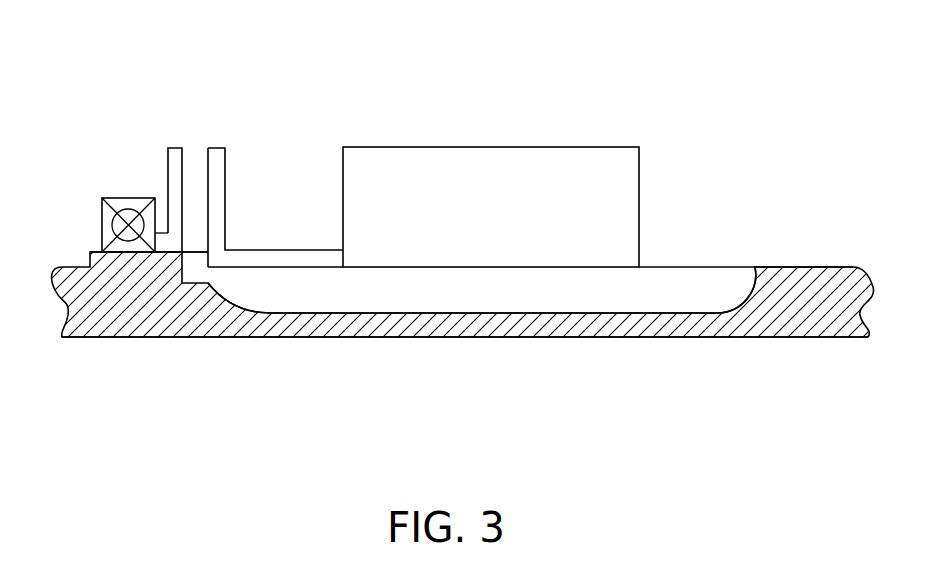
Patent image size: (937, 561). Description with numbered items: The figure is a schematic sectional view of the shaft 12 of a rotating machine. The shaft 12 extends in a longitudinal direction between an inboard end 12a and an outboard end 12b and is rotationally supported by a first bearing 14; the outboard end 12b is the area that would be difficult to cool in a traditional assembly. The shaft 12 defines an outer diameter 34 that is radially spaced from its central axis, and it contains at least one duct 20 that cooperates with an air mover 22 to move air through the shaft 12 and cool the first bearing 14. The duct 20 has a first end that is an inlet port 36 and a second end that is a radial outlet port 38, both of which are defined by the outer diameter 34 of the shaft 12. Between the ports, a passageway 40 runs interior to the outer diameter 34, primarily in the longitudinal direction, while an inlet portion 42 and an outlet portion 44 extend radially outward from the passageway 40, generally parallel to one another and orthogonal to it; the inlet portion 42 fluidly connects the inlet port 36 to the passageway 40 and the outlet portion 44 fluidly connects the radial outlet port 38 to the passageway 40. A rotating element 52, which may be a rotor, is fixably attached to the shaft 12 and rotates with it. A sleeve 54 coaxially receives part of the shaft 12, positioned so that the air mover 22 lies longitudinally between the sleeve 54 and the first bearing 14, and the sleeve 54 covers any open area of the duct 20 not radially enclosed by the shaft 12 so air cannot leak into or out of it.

The shaft 12 is at (82, 312).
The inboard end 12a is at (857, 346).
The outboard end 12b is at (127, 424).
The first bearing 14 is at (120, 189).
The duct 20 is at (439, 142).
The air mover 22 is at (209, 65).
The outer diameter 34 is at (822, 267).
The inlet port 36 is at (725, 231).
The radial outlet port 38 is at (196, 202).
The passageway 40 is at (429, 355).
The inlet portion 42 is at (718, 295).
The outlet portion 44 is at (240, 288).
The rotating element 52 is at (600, 147).
The sleeve 54 is at (285, 248).